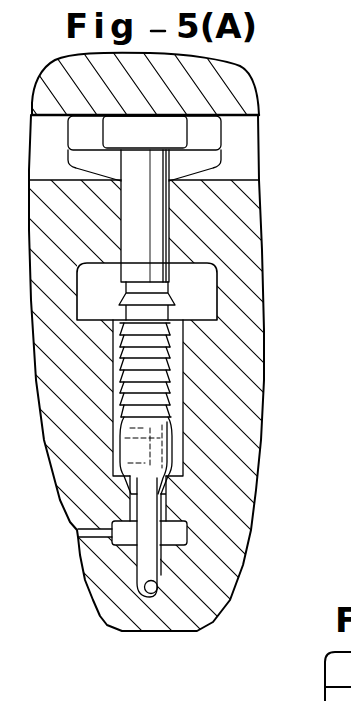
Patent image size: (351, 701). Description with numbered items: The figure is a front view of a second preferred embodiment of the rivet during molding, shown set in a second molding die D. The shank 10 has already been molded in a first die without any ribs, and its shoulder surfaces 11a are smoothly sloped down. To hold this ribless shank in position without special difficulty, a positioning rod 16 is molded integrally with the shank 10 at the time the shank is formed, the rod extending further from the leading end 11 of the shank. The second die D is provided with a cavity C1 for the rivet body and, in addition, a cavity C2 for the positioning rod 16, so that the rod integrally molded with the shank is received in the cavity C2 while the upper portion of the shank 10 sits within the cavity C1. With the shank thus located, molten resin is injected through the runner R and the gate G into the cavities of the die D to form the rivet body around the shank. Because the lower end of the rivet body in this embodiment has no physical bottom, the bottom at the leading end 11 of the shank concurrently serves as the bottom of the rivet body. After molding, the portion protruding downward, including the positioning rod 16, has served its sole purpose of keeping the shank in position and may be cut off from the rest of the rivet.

The shank 10 is at (157, 223).
The cavity for the rivet body C1 is at (200, 293).
The leading end of the shank 11 is at (163, 452).
The shoulder surfaces 11a is at (170, 422).
The second die D is at (228, 520).
The gate G is at (128, 507).
The runner R is at (78, 533).
The positioning rod 16 is at (143, 553).
The cavity for the positioning rod C2 is at (146, 556).